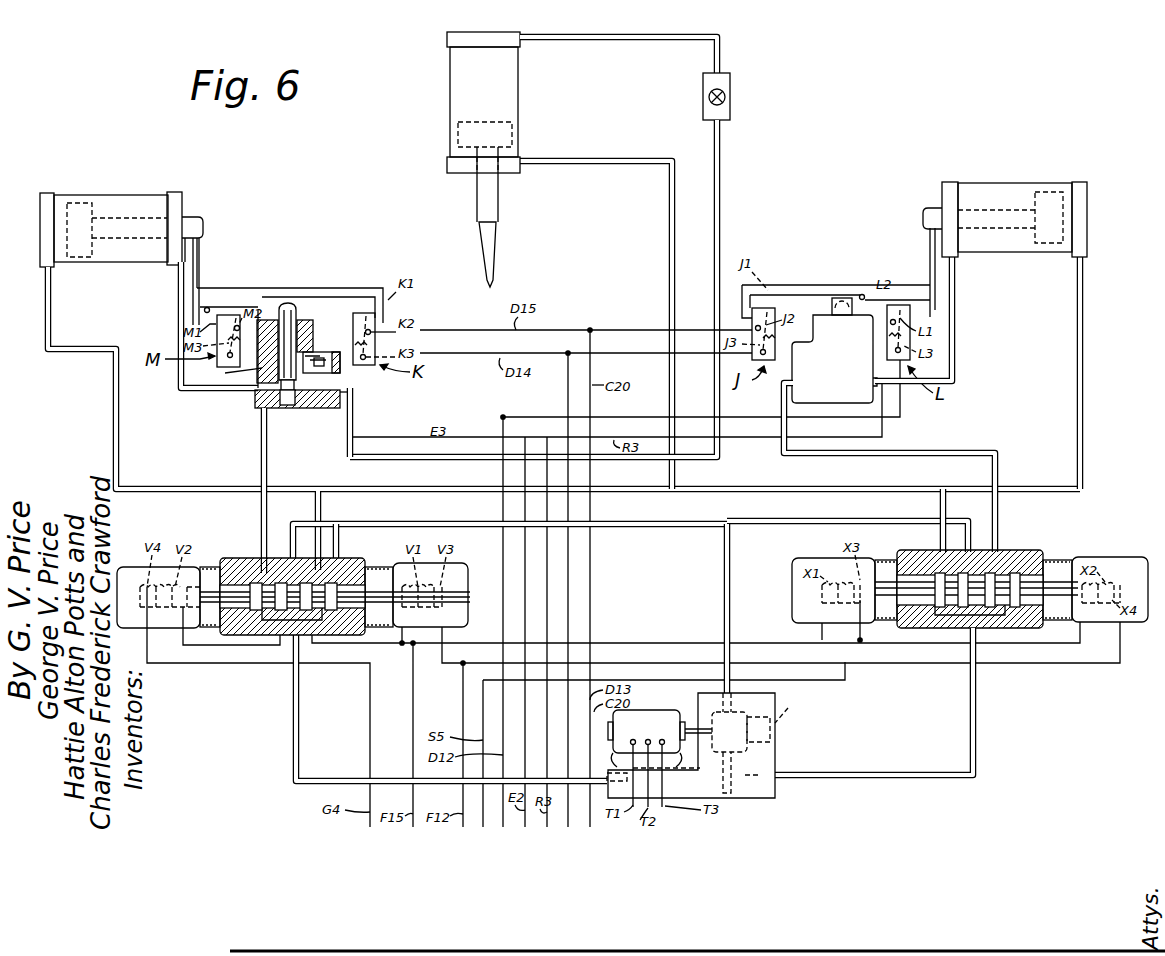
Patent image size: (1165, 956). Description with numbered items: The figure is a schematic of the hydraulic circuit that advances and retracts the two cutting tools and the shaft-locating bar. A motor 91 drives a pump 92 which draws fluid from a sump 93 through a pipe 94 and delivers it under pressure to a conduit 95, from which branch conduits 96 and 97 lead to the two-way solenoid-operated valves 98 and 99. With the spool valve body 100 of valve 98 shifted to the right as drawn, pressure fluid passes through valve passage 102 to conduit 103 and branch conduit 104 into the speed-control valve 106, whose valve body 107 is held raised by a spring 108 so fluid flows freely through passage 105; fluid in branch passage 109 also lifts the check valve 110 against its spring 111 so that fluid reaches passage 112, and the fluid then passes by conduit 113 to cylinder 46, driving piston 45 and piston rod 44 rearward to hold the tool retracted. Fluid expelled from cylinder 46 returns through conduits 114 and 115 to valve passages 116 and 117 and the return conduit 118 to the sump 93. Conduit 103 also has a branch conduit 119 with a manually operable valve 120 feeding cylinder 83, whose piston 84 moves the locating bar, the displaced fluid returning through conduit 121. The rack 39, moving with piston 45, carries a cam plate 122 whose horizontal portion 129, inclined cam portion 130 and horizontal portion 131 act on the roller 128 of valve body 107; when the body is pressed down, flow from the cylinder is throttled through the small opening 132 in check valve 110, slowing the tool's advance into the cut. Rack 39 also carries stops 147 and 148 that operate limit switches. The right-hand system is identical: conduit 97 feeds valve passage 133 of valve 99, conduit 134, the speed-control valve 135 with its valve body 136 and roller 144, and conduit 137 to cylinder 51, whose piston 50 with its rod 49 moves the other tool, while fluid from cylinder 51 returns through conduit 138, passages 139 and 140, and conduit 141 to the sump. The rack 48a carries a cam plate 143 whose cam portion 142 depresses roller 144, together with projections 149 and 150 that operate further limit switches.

The rack 39 is at (205, 252).
The piston rod 44 is at (196, 218).
The piston 45 is at (80, 203).
The cylinder 46 is at (122, 196).
The rack 48a is at (925, 255).
The piston rod 49 is at (935, 208).
The piston 50 is at (1050, 192).
The cylinder 51 is at (1002, 183).
The cylinder 83 is at (510, 66).
The piston 84 is at (512, 122).
The motor 91 is at (660, 758).
The pump 92 is at (770, 745).
The sump 93 is at (691, 745).
The pipe 94 is at (735, 785).
The conduit 95 is at (724, 617).
The branch conduit 96 is at (466, 522).
The branch conduit 97 is at (804, 522).
The valve 98 is at (230, 556).
The valve 99 is at (1035, 548).
The spool valve body 100 is at (245, 583).
The valve passage 102 is at (278, 645).
The conduit 103 is at (258, 478).
The branch conduit 104 is at (356, 410).
The passage 105 is at (272, 410).
The speed-control valve 106 is at (258, 398).
The valve body 107 is at (296, 312).
The spring 108 is at (288, 410).
The branch passage 109 is at (351, 390).
The check valve 110 is at (321, 352).
The spring 111 is at (320, 352).
The passage 112 is at (226, 374).
The conduit 113 is at (185, 392).
The conduit 114 is at (120, 432).
The conduit 115 is at (322, 511).
The valve passage 116 is at (336, 558).
The valve passage 117 is at (313, 645).
The return conduit 118 is at (300, 700).
The branch conduit 119 is at (722, 188).
The manually operable valve 120 is at (731, 86).
The conduit 121 is at (668, 240).
The cam plate 122 is at (232, 288).
The roller 128 is at (288, 300).
The horizontal portion 129 is at (310, 297).
The inclined cam portion 130 is at (262, 297).
The horizontal portion 131 is at (208, 306).
The small opening 132 is at (325, 370).
The valve passage 133 is at (985, 545).
The conduit 134 is at (988, 452).
The speed-control valve 135 is at (834, 359).
The valve body 136 is at (820, 326).
The conduit 137 is at (958, 363).
The conduit 138 is at (1084, 306).
The passage 139 is at (935, 556).
The passage 140 is at (993, 628).
The conduit 141 is at (868, 775).
The cam portion 142 is at (864, 294).
The cam plate 143 is at (788, 285).
The roller 144 is at (840, 297).
The stop 147 is at (192, 322).
The stop 148 is at (378, 305).
The projection 149 is at (745, 300).
The projection 150 is at (937, 308).